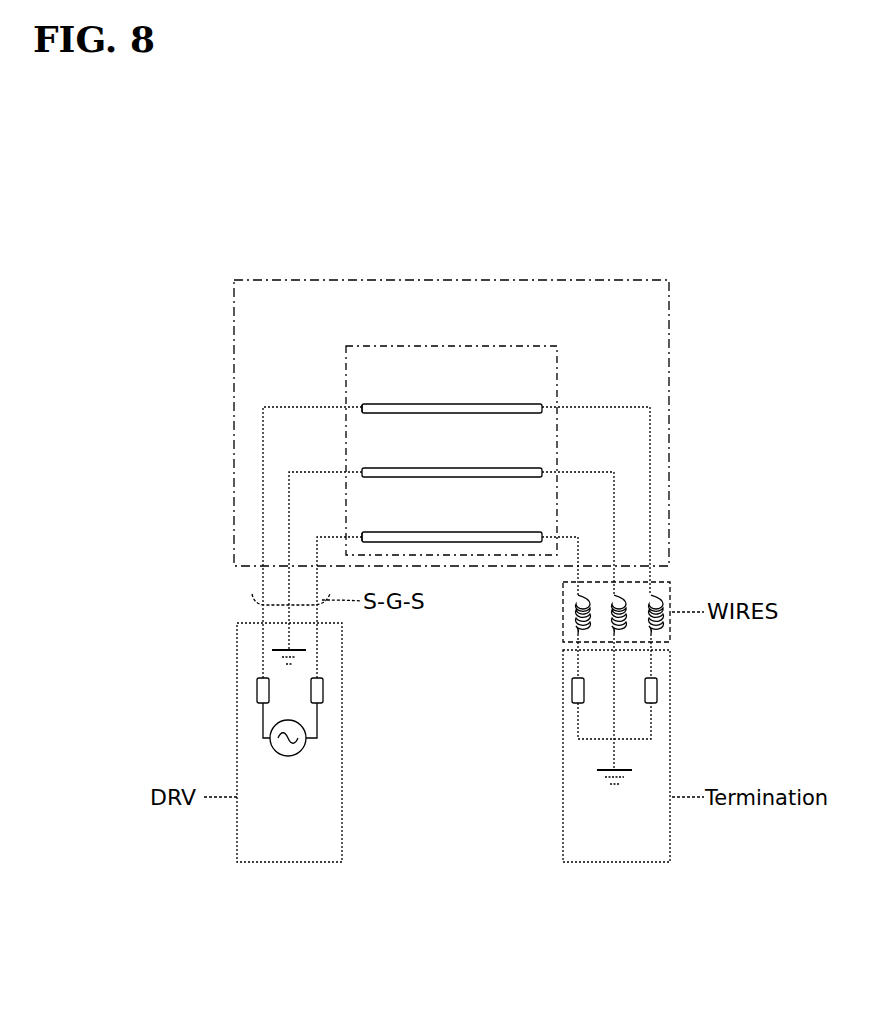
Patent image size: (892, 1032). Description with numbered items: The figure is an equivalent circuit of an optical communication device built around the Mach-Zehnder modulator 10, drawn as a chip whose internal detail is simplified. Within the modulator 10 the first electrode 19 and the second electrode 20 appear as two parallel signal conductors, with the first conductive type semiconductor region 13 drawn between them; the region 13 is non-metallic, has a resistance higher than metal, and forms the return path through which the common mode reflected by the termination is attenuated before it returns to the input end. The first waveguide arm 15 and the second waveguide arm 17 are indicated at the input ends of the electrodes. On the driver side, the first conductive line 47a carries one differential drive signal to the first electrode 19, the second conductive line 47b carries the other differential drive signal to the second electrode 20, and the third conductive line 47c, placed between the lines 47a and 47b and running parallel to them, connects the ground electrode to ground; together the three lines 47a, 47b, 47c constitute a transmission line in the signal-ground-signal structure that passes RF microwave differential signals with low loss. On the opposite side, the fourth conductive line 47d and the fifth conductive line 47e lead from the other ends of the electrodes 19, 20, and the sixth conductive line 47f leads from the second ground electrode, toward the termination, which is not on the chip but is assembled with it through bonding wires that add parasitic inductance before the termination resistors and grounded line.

The Mach-Zehnder modulator 10 is at (540, 343).
The first conductive type semiconductor region 13 is at (483, 468).
The first waveguide arm 15 is at (360, 406).
The second waveguide arm 17 is at (360, 536).
The first electrode 19 is at (483, 404).
The second electrode 20 is at (483, 532).
The first conductive line 47a is at (306, 407).
The second conductive line 47b is at (343, 537).
The third conductive line 47c is at (322, 472).
The fourth conductive line 47d is at (590, 407).
The fifth conductive line 47e is at (565, 537).
The sixth conductive line 47f is at (580, 472).